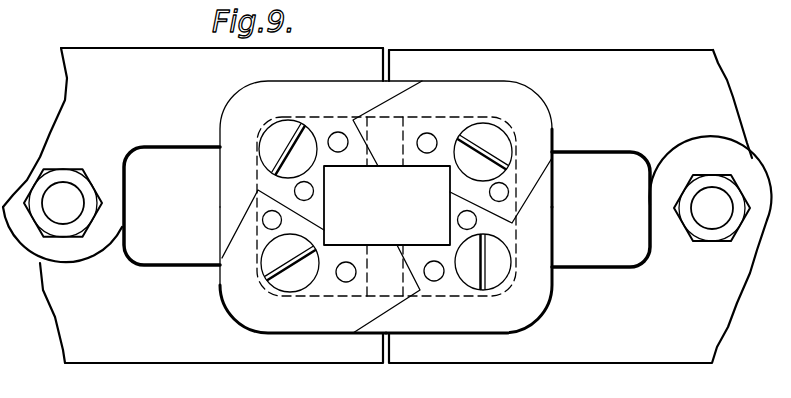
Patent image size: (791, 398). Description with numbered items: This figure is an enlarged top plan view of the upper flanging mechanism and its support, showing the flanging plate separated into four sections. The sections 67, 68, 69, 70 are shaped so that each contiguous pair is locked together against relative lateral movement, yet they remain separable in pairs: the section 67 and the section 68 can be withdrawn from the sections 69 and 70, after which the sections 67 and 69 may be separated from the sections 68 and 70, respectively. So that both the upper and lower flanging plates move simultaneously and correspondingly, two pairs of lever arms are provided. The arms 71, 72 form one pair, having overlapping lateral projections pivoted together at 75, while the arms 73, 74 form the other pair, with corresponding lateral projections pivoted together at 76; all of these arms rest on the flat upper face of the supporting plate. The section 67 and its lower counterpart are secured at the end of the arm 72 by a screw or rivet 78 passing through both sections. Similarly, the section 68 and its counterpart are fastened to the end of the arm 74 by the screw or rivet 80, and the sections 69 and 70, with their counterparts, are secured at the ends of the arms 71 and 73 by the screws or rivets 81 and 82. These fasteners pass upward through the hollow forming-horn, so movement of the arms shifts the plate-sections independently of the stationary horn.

The section of upper flanging plate 67 is at (226, 108).
The section of upper flanging plate 68 is at (543, 124).
The section of upper flanging plate 69 is at (222, 293).
The section of upper flanging plate 70 is at (545, 300).
The lever arm 71 is at (103, 350).
The lever arm 72 is at (117, 57).
The lever arm 73 is at (678, 355).
The lever arm 74 is at (667, 40).
The pivot 75 is at (50, 192).
The pivot 76 is at (717, 220).
The screw or rivet 78 is at (285, 128).
The screw or rivet 80 is at (483, 137).
The screw or rivet 81 is at (286, 282).
The screw or rivet 82 is at (500, 259).